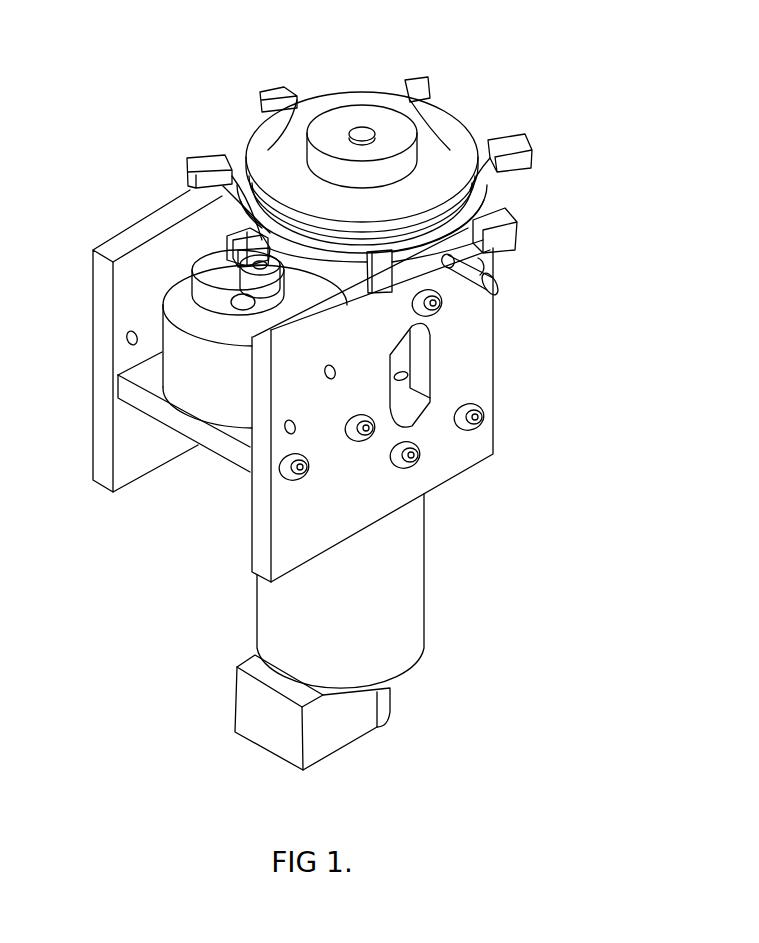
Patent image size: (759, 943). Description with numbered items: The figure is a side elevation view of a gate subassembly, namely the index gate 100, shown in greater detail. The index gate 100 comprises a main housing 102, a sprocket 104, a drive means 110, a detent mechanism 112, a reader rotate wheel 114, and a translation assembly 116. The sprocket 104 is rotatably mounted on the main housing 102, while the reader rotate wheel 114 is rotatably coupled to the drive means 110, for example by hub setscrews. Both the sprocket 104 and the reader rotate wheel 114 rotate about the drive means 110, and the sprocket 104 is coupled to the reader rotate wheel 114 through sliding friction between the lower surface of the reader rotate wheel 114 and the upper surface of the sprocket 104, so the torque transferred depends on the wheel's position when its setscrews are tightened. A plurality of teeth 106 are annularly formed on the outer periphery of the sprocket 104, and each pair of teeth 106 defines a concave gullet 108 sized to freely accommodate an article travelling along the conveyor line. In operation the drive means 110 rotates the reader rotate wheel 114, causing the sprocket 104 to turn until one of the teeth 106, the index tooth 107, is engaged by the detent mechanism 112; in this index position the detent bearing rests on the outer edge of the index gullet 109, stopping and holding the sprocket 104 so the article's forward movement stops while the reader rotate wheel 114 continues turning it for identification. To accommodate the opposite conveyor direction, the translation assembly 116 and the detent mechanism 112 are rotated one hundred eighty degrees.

The index gate 100 is at (389, 389).
The main housing 102 is at (487, 353).
The sprocket 104 is at (537, 153).
The teeth 106 is at (362, 126).
The index tooth 107 is at (237, 247).
The gullet 108 is at (358, 93).
The index gullet 109 is at (340, 303).
The drive means 110 is at (367, 145).
The detent mechanism 112 is at (273, 332).
The reader rotate wheel 114 is at (480, 194).
The translation assembly 116 is at (160, 395).